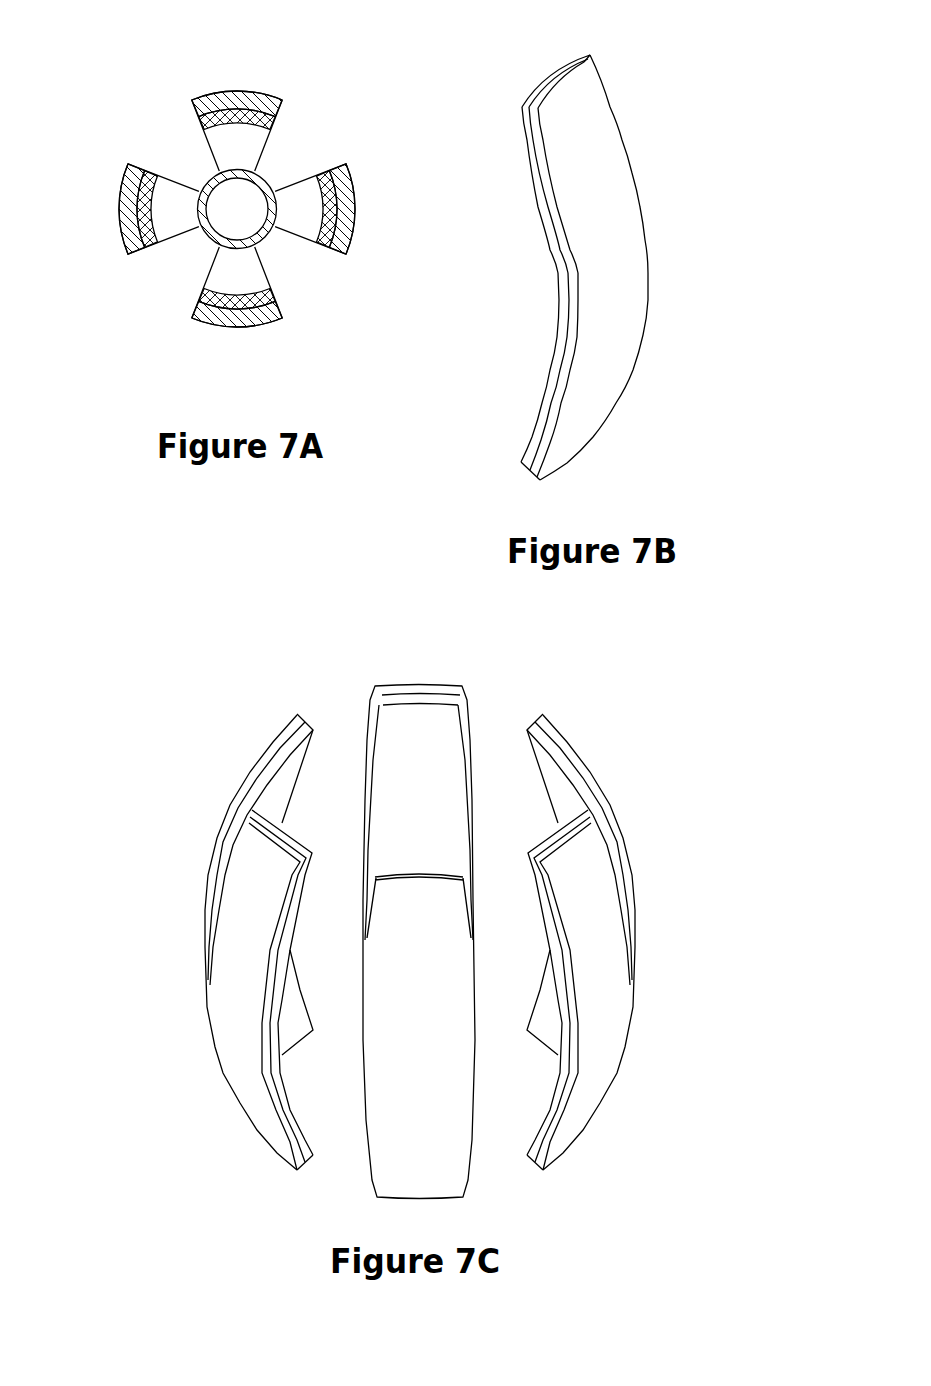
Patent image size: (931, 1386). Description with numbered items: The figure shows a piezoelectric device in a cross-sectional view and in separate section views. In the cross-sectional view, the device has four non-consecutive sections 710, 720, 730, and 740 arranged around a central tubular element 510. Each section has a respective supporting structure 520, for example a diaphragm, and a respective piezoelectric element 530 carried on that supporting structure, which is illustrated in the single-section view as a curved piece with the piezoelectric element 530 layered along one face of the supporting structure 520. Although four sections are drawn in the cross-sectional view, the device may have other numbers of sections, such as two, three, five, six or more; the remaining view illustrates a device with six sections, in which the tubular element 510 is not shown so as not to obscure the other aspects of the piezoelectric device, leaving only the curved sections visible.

In FIG. 7A, the tubular element 510 is at (199, 189).
In FIG. 7A, the supporting structure 520 is at (281, 311).
In FIG. 7B, the supporting structure 520 is at (653, 267).
In FIG. 7A, the piezoelectric element 530 is at (274, 122).
In FIG. 7B, the piezoelectric element 530 is at (558, 230).
In FIG. 7A, the section 710 is at (377, 202).
In FIG. 7A, the section 720 is at (233, 317).
In FIG. 7A, the section 730 is at (111, 223).
In FIG. 7A, the section 740 is at (247, 94).